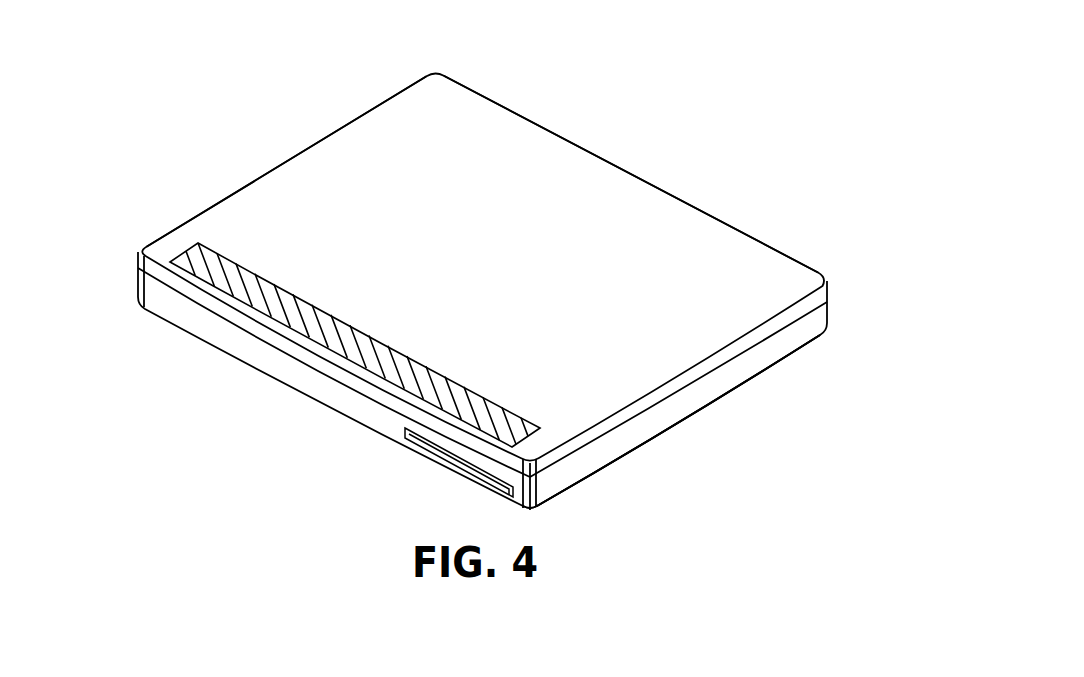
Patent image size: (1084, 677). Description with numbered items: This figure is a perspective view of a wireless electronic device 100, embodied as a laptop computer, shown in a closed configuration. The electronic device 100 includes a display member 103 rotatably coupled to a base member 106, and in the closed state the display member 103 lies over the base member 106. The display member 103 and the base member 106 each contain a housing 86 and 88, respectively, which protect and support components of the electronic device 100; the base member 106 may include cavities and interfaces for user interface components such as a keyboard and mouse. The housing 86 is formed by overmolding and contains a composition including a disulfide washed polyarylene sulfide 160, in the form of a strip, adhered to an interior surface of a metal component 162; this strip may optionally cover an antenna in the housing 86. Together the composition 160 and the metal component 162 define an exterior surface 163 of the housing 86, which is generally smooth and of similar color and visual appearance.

The wireless electronic device 100 is at (173, 66).
The display member 103 is at (502, 262).
The exterior surface 163 is at (370, 137).
The metal component 162 is at (682, 221).
The composition including a disulfide washed polyarylene sulfide 160 is at (483, 412).
The housing 88 is at (208, 330).
The housing 86 is at (822, 295).
The base member 106 is at (568, 493).